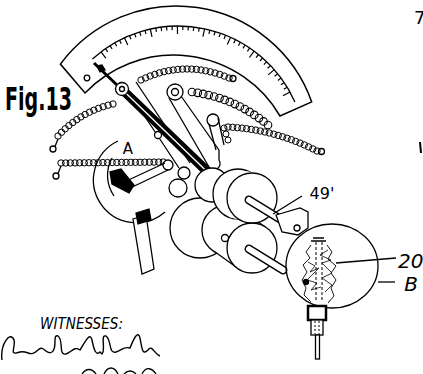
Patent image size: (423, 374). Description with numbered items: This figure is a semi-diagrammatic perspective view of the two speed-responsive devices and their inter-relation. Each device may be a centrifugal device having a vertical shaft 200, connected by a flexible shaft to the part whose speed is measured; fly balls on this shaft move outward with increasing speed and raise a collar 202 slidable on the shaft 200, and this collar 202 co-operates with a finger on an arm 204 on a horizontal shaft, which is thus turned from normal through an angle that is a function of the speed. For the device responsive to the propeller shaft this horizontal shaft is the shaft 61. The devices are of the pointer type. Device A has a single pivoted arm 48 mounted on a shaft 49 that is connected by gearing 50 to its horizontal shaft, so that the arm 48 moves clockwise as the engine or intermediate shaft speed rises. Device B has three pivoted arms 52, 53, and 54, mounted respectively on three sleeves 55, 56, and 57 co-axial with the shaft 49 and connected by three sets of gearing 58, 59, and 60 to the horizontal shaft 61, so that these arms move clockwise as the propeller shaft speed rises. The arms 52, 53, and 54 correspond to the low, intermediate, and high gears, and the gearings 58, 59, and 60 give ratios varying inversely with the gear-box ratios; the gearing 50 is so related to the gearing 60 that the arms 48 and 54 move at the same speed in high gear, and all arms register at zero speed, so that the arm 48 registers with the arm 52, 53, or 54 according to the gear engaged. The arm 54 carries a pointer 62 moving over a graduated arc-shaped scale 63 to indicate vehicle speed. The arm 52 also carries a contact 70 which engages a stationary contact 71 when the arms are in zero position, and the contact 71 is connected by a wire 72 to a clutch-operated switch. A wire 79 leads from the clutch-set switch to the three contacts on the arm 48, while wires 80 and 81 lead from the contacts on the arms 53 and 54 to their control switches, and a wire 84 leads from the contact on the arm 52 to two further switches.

The pivoted arm 48 is at (140, 125).
The shaft 49 is at (157, 192).
The gearing 50 is at (150, 220).
The pivoted arm 52 is at (211, 125).
The pivoted arm 53 is at (167, 93).
The pivoted arm 54 is at (117, 98).
The sleeve 55 is at (216, 161).
The sleeve 56 is at (235, 178).
The sleeve 57 is at (258, 192).
The gearing 58 is at (197, 232).
The gearing 59 is at (223, 247).
The gearing 60 is at (253, 262).
The horizontal shaft 61 is at (279, 266).
The pointer 62 is at (96, 64).
The arc-shaped scale 63 is at (268, 48).
The contact 70 is at (236, 176).
The stationary contact 71 is at (126, 187).
The wire 72 is at (99, 172).
The wire 79 is at (73, 129).
The wire 80 is at (241, 113).
The wire 81 is at (195, 82).
The wire 84 is at (287, 147).
The vertical shaft 200 is at (323, 355).
The collar 202 is at (347, 308).
The arm 204 is at (309, 293).